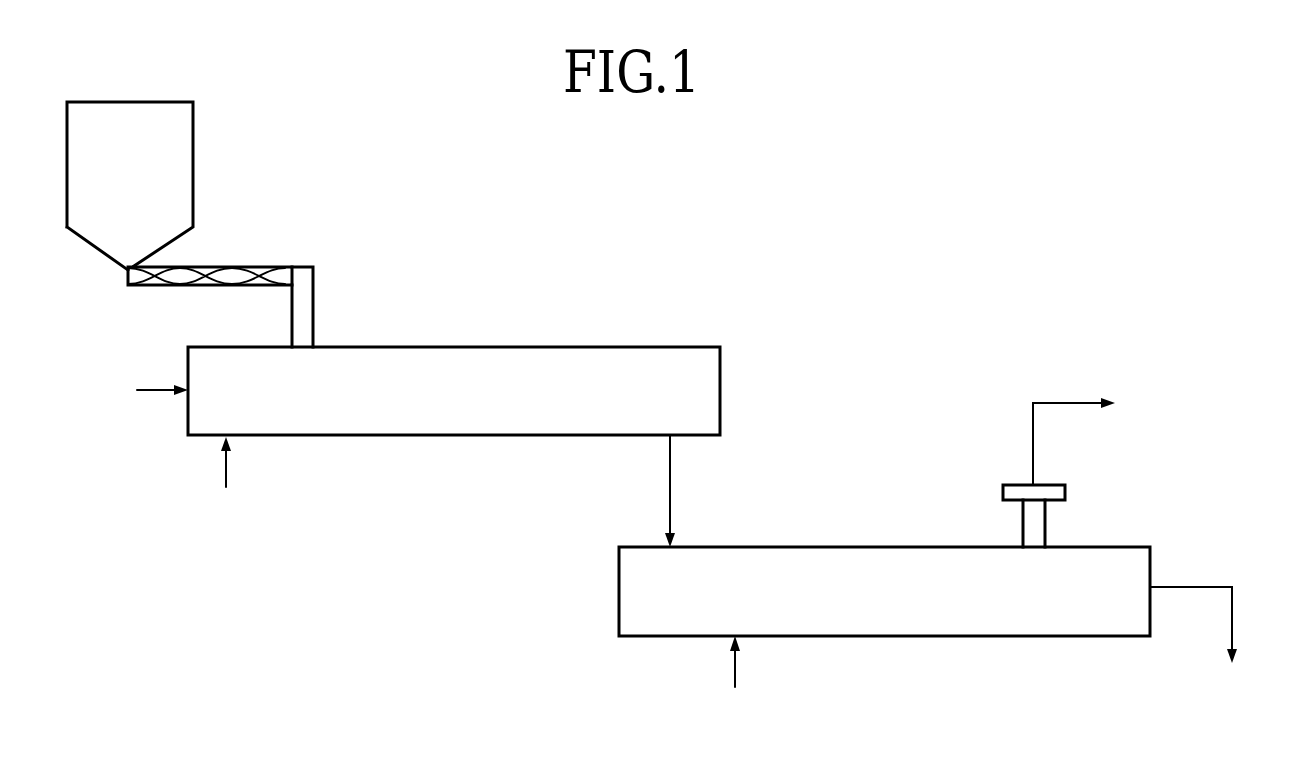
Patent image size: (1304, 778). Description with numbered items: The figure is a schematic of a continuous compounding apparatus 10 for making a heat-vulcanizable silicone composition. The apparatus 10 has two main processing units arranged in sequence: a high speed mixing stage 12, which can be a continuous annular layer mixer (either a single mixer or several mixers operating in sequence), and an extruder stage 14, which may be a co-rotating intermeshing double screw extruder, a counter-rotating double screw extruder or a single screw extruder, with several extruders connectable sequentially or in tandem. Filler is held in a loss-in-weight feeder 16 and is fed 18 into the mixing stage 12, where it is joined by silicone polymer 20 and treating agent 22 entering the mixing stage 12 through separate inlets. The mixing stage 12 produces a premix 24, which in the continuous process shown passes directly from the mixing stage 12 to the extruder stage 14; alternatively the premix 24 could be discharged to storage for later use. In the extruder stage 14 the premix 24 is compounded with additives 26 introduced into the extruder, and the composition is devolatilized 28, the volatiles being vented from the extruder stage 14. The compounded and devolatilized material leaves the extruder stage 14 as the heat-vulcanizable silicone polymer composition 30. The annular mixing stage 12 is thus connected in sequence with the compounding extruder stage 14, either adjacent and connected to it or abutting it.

The apparatus 10 is at (954, 166).
The high speed mixing stage 12 is at (480, 347).
The extruder stage 14 is at (820, 547).
The loss-in-weight feeder 16 is at (193, 155).
The feed of filler 18 is at (313, 305).
The silicone polymer 20 is at (160, 386).
The treating agent 22 is at (225, 485).
The premix 24 is at (670, 488).
The additives 26 is at (733, 684).
The devolatilization 28 is at (1033, 445).
The heat-vulcanizable silicone polymer composition 30 is at (1190, 587).